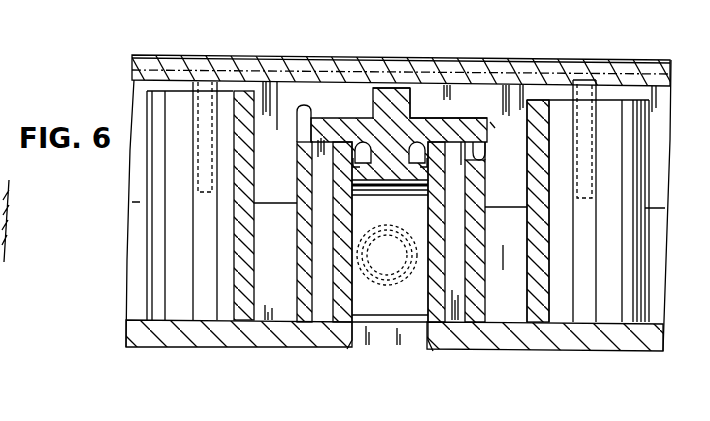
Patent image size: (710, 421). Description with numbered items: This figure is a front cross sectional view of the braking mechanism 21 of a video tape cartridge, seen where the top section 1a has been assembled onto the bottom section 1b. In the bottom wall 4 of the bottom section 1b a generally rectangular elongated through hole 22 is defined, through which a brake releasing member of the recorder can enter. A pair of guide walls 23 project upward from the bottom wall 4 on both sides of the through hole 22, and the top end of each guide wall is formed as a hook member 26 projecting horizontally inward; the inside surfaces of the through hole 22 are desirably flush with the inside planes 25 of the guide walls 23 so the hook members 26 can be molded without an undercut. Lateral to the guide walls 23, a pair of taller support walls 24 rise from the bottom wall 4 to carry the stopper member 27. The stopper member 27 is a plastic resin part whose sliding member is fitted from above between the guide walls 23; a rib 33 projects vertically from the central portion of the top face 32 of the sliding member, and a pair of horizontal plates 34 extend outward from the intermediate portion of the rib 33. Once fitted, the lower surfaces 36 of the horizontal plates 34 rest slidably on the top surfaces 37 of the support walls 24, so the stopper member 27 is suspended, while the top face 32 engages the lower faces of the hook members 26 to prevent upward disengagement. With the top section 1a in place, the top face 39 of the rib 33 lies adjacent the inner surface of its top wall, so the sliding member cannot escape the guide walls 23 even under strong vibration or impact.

The top section 1a is at (173, 69).
The bottom section 1b is at (175, 337).
The bottom wall 4 is at (577, 340).
The braking mechanism 21 is at (500, 125).
The through hole 22 is at (353, 342).
The guide walls 23 is at (431, 240).
The support walls 24 is at (303, 285).
The inside planes 25 is at (427, 195).
The hook members 26 is at (350, 184).
The stopper member 27 is at (358, 112).
The top face 32 is at (390, 150).
The rib 33 is at (448, 101).
The horizontal plates 34 is at (300, 134).
The lower surfaces 36 is at (322, 142).
The top surfaces 37 is at (297, 140).
The top face 39 is at (393, 88).